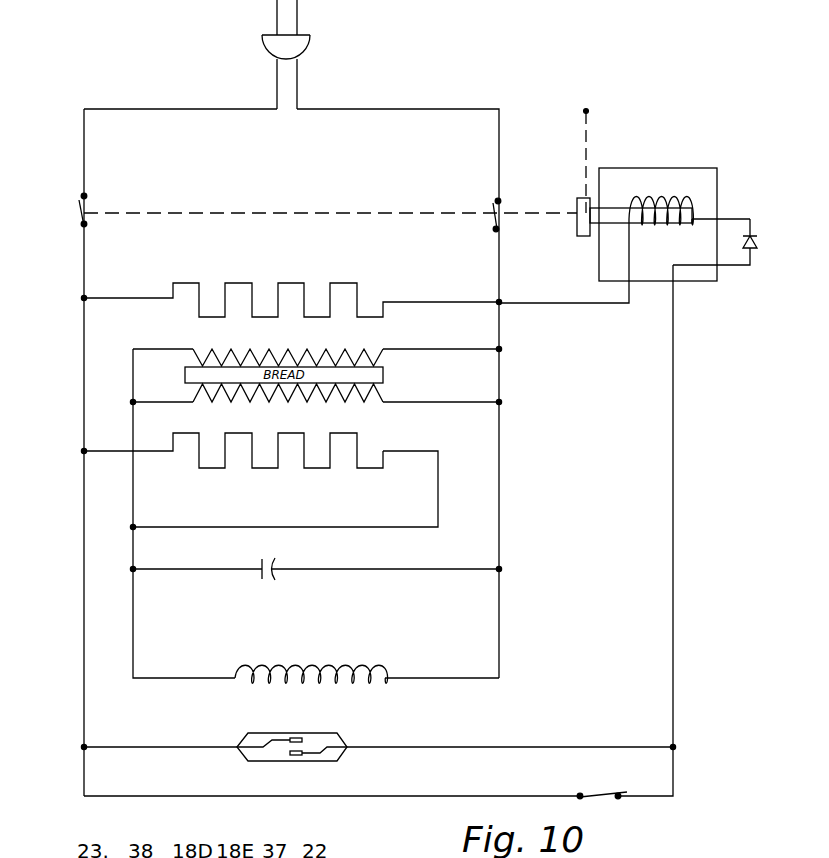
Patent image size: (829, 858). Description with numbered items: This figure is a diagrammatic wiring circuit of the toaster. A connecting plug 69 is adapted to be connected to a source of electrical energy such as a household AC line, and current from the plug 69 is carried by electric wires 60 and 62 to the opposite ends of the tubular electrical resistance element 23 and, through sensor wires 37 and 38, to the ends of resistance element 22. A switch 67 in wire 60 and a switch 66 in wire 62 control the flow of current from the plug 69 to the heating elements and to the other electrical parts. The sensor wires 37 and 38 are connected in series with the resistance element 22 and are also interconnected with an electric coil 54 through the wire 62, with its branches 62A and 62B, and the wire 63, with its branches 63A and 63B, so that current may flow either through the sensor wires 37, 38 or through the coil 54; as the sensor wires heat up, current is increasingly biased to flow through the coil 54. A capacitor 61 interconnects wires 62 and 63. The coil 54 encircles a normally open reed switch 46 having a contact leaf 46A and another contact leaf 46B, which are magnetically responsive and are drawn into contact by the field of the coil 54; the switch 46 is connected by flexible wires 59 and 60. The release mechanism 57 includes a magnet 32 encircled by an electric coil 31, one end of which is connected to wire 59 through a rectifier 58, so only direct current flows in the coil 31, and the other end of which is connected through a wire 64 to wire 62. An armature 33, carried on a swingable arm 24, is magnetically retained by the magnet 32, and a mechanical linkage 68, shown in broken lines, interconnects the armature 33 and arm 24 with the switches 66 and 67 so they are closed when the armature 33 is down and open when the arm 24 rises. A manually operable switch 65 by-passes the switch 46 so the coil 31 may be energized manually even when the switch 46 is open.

The connecting plug 69 is at (311, 44).
The electric wire 60 is at (145, 108).
The electric wire 62 is at (445, 109).
The switch 67 is at (86, 198).
The switch 66 is at (498, 230).
The mechanical linkage 68 is at (378, 213).
The swingable arm 24 is at (585, 145).
The armature 33 is at (578, 199).
The magnet 32 is at (608, 208).
The electric coil 31 is at (665, 200).
The release mechanism 57 is at (729, 186).
The rectifier 58 is at (750, 248).
The wire 64 is at (612, 304).
The tubular electrical resistance element 23 is at (372, 283).
The resistance element 22 is at (357, 445).
The wire branch 63B is at (166, 349).
The wire branch 63A is at (155, 400).
The sensor wire 38 is at (372, 352).
The sensor wire 37 is at (378, 396).
The wire branch 62B is at (445, 349).
The wire branch 62A is at (438, 405).
The wire 63 is at (133, 610).
The capacitor 61 is at (277, 565).
The electric coil 54 is at (335, 670).
The reed switch 46 is at (335, 732).
The contact leaf 46A is at (287, 738).
The contact leaf 46B is at (308, 756).
The electric wire 59 is at (372, 750).
The manually operable switch 65 is at (606, 795).